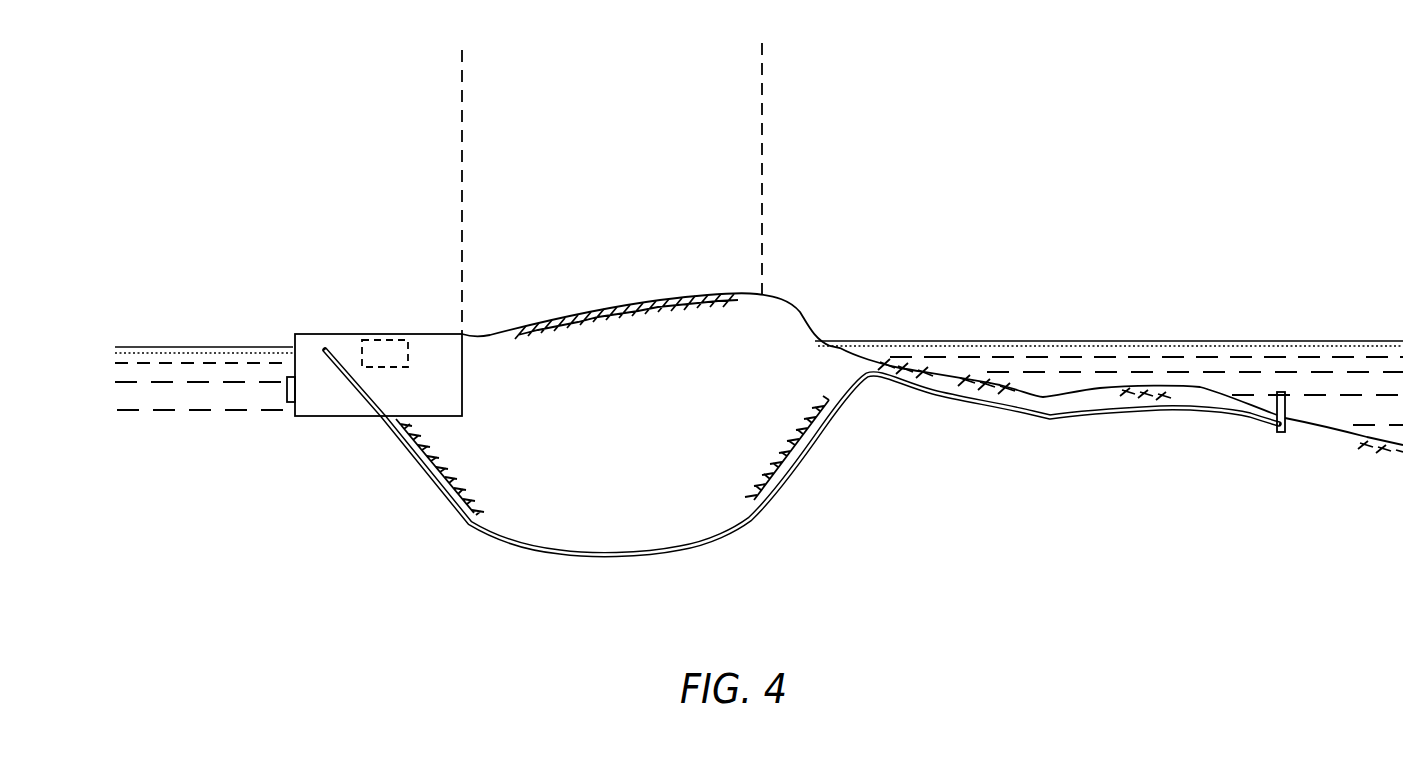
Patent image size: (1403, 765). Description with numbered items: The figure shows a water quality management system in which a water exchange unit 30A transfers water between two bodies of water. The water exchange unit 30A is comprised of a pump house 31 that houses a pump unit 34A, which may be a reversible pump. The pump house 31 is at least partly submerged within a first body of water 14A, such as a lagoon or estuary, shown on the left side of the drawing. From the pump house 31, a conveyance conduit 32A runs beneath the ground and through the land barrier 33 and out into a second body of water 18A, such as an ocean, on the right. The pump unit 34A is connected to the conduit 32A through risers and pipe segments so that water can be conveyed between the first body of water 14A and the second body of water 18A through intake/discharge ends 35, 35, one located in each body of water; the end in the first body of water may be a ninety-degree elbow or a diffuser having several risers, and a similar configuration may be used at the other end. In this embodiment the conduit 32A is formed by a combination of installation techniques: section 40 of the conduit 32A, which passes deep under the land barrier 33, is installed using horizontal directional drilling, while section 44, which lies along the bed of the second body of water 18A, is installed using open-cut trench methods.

The first body of water 14A is at (176, 364).
The second body of water 18A is at (1127, 353).
The water exchange unit 30A is at (396, 282).
The pump house 31 is at (327, 334).
The conveyance conduit 32A is at (558, 542).
The land barrier 33 is at (637, 307).
The pump unit 34A is at (385, 376).
The intake/discharge end 35 is at (287, 390).
The section of conduit 40 is at (742, 537).
The section of conduit 44 is at (943, 395).